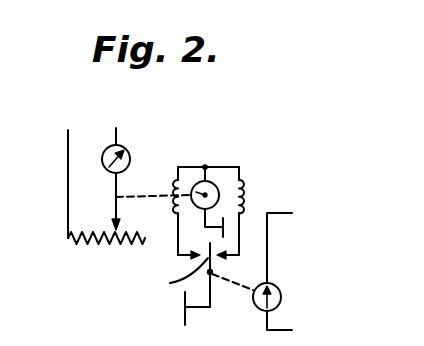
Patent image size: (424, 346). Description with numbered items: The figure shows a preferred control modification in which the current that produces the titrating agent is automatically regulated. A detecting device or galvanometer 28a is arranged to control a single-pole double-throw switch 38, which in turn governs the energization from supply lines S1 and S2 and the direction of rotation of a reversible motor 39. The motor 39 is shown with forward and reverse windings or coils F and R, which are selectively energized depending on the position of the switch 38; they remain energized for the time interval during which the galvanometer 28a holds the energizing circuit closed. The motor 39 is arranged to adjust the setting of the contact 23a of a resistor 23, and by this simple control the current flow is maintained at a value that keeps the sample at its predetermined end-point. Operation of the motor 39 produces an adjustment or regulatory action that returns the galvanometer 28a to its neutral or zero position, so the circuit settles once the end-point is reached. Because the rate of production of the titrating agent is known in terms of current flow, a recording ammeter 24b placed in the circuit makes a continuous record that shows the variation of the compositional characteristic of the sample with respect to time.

The resistor 23 is at (93, 246).
The contact 23a is at (116, 207).
The recording ammeter 24b is at (126, 150).
The reversible motor 39 is at (207, 165).
The forward winding F is at (176, 186).
The reverse winding R is at (241, 185).
The supply line S2 is at (241, 222).
The single-pole double-throw switch 38 is at (195, 275).
The supply line S1 is at (183, 306).
The galvanometer 28a is at (282, 298).